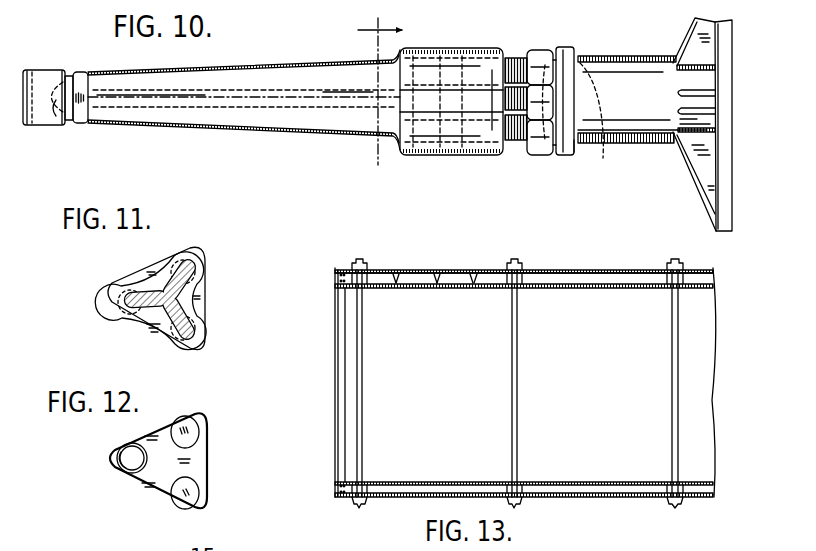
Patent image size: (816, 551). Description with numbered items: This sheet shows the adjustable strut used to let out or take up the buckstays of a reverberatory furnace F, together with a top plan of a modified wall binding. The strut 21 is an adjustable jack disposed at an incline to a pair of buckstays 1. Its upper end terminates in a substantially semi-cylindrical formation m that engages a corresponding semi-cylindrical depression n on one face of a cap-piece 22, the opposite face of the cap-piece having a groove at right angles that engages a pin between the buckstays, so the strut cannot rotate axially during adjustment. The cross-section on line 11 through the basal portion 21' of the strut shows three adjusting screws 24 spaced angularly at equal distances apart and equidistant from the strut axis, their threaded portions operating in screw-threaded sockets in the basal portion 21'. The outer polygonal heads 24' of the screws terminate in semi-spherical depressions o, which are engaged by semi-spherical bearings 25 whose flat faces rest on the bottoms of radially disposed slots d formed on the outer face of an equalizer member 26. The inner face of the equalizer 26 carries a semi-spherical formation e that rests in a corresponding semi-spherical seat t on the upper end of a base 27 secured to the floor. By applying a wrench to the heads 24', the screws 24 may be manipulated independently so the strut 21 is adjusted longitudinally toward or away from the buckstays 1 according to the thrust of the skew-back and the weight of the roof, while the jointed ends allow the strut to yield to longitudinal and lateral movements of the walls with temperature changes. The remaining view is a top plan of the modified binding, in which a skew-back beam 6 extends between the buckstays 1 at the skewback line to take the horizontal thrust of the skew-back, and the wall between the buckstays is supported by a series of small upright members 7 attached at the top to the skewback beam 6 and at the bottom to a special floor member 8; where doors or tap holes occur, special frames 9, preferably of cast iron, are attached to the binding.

In FIG. 10, the special frame 9 is at (32, 72).
In FIG. 10, the cap-piece 22 is at (47, 76).
In FIG. 10, the semi-cylindrical depression n is at (56, 108).
In FIG. 10, the semi-cylindrical formation m is at (68, 118).
In FIG. 10, the adjustable strut 21 is at (244, 114).
In FIG. 11, the adjustable strut 21 is at (179, 295).
In FIG. 10, the section line 11- 11 is at (380, 95).
In FIG. 10, the basal portion of the strut 21' is at (451, 119).
In FIG. 11, the basal portion of the strut 21' is at (181, 298).
In FIG. 10, the adjusting screw 24 is at (514, 80).
In FIG. 11, the adjusting screw 24 is at (154, 283).
In FIG. 10, the polygonal head 24' is at (543, 85).
In FIG. 10, the semi-spherical depression o is at (545, 140).
In FIG. 10, the equalizer member 26 is at (568, 48).
In FIG. 12, the equalizer member 26 is at (202, 450).
In FIG. 10, the semi-spherical bearing 25 is at (562, 152).
In FIG. 12, the semi-spherical bearing 25 is at (120, 465).
In FIG. 10, the semi-spherical formation e is at (575, 148).
In FIG. 10, the semi-spherical seat t is at (642, 116).
In FIG. 10, the base 27 is at (658, 127).
In FIG. 12, the radial slot d is at (190, 427).
In FIG. 13, the buckstay 1 is at (527, 273).
In FIG. 13, the skew-back beam 6 is at (567, 281).
In FIG. 13, the upright member 7 is at (403, 271).
In FIG. 13, the floor member 8 is at (458, 278).
In FIG. 13, the reverberatory furnace F is at (710, 463).